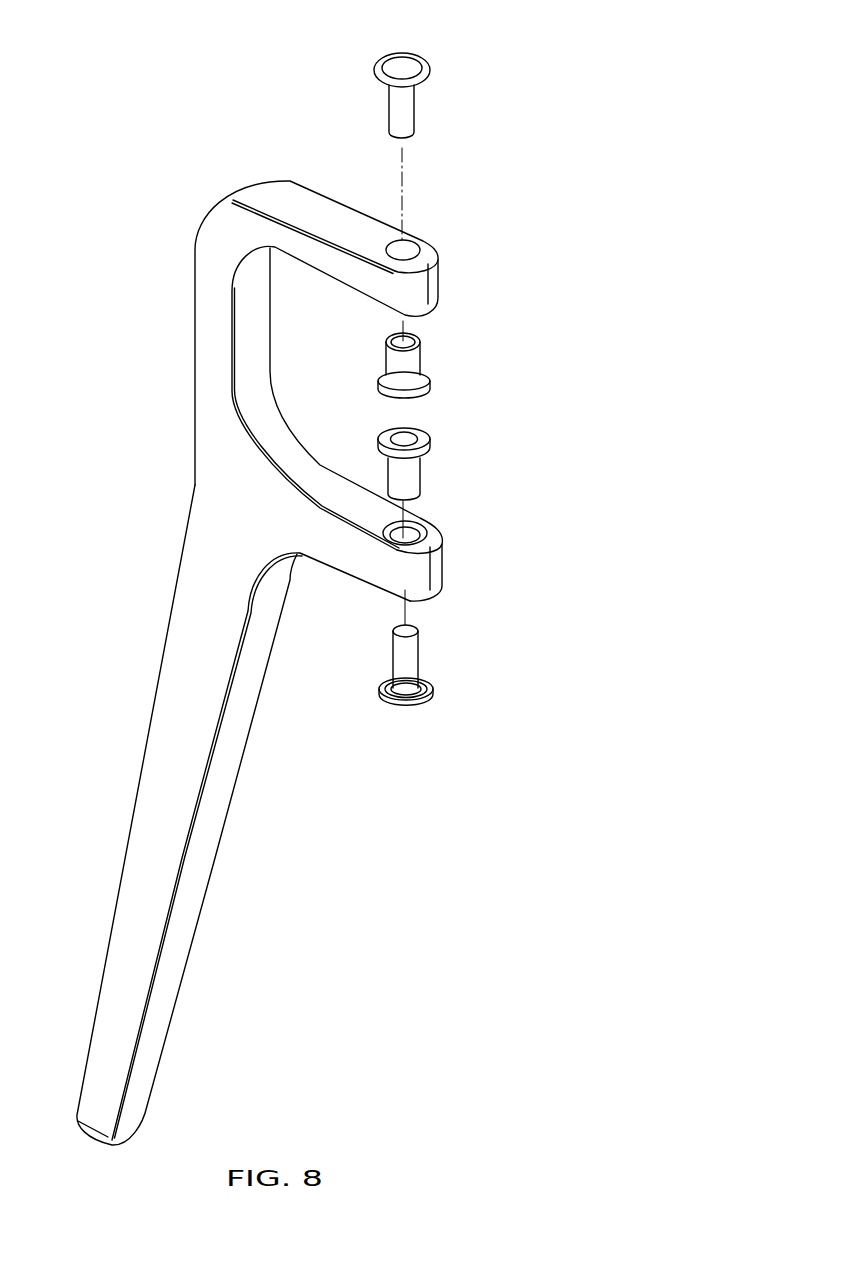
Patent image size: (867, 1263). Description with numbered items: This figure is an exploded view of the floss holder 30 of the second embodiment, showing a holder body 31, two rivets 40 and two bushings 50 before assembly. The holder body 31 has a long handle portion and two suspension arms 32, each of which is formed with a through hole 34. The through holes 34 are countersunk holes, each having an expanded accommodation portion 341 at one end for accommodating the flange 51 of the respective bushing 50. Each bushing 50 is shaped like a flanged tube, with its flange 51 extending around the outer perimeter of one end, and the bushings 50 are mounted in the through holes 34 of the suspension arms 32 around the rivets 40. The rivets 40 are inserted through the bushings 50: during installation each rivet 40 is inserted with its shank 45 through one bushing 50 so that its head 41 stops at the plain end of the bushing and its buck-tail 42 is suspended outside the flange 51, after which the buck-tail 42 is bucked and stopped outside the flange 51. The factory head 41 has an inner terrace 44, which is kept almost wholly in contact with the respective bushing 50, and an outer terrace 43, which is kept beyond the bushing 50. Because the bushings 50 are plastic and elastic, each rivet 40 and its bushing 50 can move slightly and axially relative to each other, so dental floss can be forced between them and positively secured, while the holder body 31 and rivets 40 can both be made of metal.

The floss holder 30 is at (275, 627).
The holder body 31 is at (210, 512).
The suspension arms 32 is at (333, 213).
The through holes 34 is at (453, 383).
The expanded accommodation portion 341 is at (427, 532).
The rivets 40 is at (459, 399).
The head 41 is at (407, 67).
The buck-tail 42 is at (407, 145).
The outer terrace 43 is at (418, 703).
The inner terrace 44 is at (430, 695).
The shank 45 is at (403, 125).
The bushings 50 is at (421, 410).
The flange 51 is at (388, 443).